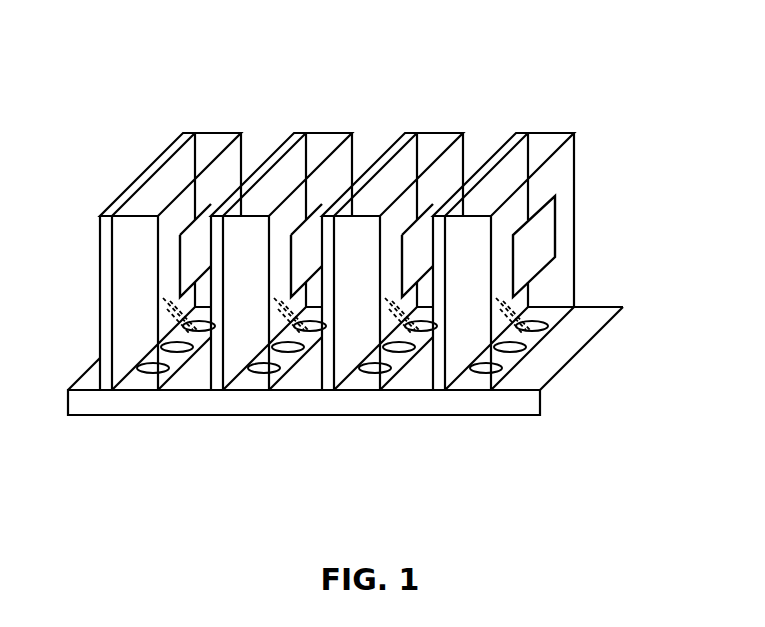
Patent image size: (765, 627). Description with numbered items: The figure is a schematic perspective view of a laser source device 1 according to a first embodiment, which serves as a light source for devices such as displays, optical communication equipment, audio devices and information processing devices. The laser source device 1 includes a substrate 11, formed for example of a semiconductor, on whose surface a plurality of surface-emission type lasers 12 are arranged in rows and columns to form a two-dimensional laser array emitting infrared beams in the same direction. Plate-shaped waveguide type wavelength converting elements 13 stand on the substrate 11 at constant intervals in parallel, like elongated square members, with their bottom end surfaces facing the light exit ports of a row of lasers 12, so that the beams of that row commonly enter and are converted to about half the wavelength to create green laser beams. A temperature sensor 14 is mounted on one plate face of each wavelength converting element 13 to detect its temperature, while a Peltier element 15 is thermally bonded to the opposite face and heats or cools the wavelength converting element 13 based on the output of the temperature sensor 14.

The laser source device 1 is at (376, 102).
The substrate 11 is at (547, 396).
The lasers 12 is at (138, 377).
The wavelength converting element 13 is at (293, 258).
The temperature sensor 14 is at (188, 238).
The Peltier element 15 is at (100, 295).